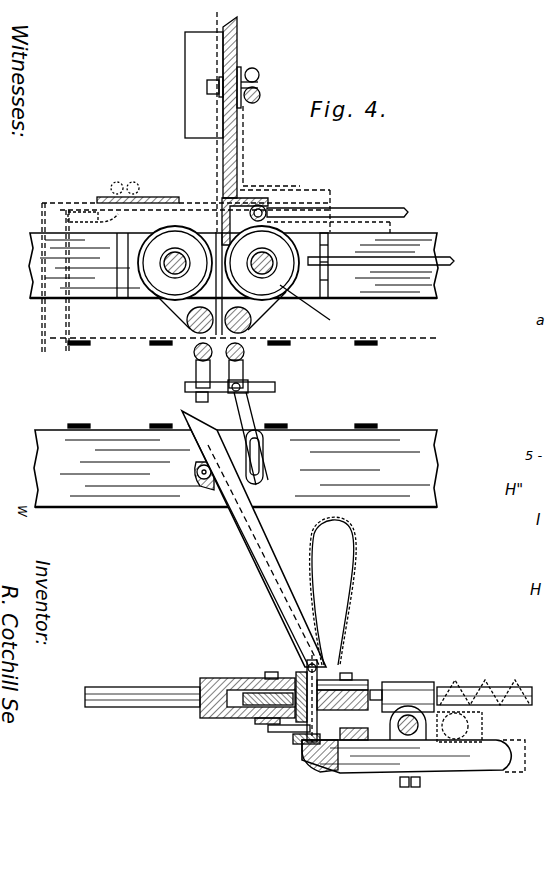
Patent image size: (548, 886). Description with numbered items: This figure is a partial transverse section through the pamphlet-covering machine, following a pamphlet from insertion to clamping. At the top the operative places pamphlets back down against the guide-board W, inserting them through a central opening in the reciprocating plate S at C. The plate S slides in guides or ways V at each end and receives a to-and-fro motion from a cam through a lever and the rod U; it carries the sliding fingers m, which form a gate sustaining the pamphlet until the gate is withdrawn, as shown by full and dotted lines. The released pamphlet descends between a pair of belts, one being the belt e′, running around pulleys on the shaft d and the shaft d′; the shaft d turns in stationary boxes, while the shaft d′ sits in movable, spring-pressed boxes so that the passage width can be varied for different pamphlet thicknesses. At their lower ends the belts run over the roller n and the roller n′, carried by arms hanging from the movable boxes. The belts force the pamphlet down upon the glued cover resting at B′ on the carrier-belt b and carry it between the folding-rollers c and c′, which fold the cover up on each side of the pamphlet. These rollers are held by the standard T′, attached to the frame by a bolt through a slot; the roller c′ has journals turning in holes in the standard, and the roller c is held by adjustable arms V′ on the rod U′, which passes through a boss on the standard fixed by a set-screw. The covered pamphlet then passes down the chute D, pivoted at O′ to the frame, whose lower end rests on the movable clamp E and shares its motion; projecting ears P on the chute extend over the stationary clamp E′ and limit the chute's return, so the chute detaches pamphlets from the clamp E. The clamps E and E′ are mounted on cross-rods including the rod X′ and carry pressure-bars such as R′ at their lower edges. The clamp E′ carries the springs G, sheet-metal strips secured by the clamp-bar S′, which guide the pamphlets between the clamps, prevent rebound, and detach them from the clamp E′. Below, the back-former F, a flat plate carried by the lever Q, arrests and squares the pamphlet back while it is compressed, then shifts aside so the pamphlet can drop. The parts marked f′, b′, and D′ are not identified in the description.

The pamphlet insertion point C is at (216, 150).
The guide-board W is at (239, 104).
The reciprocating plate S is at (110, 196).
The guides or ways V is at (82, 190).
The shaft d is at (168, 252).
The sliding fingers (gate) m is at (222, 215).
The rod U is at (395, 209).
The shaft d′ is at (285, 265).
The roller n is at (188, 324).
The roller n′ is at (255, 315).
The belt e′ is at (158, 317).
The cover-receiving position B′ is at (233, 287).
The rail f′ is at (245, 351).
The slide blocks b′ is at (222, 353).
The folding-roller c is at (194, 352).
The folding-roller c′ is at (244, 352).
The adjustable arms V′ is at (185, 386).
The rod U′ is at (255, 392).
The standard T′ is at (252, 416).
The carrier-belt b is at (82, 424).
The pivot O′ is at (197, 470).
The chute D is at (254, 539).
The springs G is at (348, 585).
The block D′ is at (247, 686).
The movable clamp E is at (300, 680).
The stationary clamp E′ is at (330, 675).
The projecting ears P is at (352, 680).
The clamp-bar S′ is at (408, 682).
The rod X′ is at (142, 685).
The pressure-bar R′ is at (268, 728).
The back-former F is at (294, 740).
The lever Q is at (470, 762).